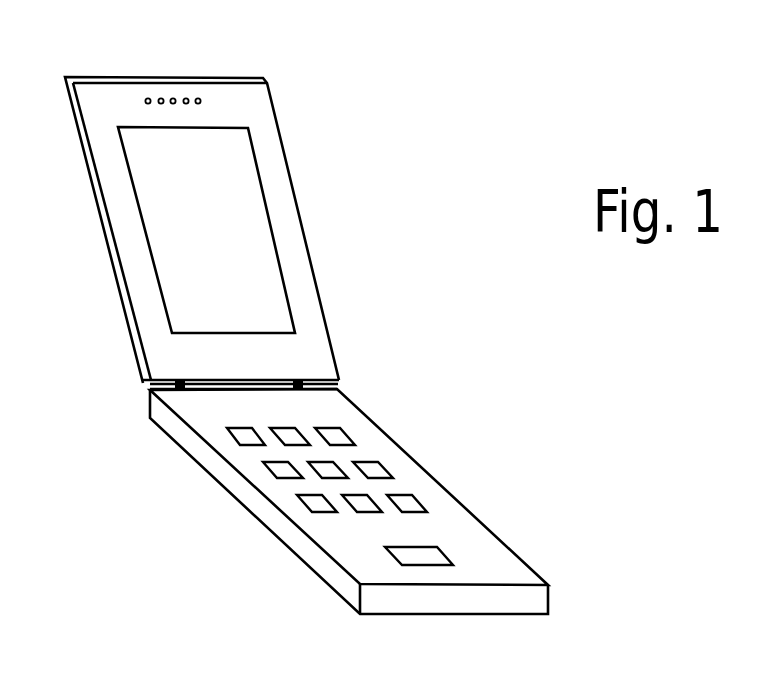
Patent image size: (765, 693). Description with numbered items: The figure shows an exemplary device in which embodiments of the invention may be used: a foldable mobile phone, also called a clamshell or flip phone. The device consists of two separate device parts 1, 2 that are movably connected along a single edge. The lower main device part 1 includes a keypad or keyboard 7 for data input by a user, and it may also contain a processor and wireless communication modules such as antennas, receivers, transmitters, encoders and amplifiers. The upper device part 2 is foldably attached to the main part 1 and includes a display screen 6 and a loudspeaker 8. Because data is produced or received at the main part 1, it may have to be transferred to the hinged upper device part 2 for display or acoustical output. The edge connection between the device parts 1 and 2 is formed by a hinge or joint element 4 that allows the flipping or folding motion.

The lower main device part 1 is at (530, 603).
The upper device part 2 is at (103, 238).
The hinge or joint element 4 is at (178, 396).
The display screen 6 is at (237, 185).
The keypad or keyboard 7 is at (340, 433).
The loudspeaker 8 is at (178, 96).